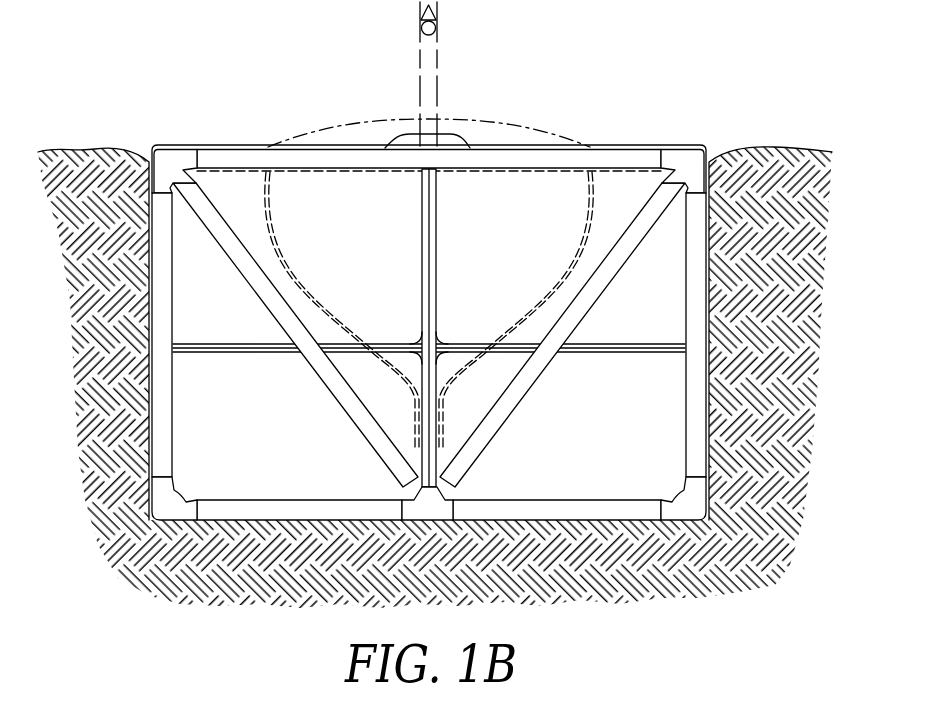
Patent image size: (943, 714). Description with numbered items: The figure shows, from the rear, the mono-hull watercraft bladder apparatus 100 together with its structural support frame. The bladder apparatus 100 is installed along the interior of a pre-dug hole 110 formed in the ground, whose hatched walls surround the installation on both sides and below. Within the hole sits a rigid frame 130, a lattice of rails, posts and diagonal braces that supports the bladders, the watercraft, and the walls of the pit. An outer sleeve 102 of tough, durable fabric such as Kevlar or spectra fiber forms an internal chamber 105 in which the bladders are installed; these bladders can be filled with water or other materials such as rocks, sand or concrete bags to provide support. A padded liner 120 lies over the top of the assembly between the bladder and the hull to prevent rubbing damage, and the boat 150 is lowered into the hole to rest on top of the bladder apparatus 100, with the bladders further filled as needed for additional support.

The bladder apparatus 100 is at (447, 322).
The outer sleeve 102 is at (636, 488).
The internal chamber 105 is at (560, 480).
The pre-dug hole 110 is at (767, 148).
The padded liner 120 is at (631, 145).
The rigid frame 130 is at (158, 164).
The boat 150 is at (465, 124).